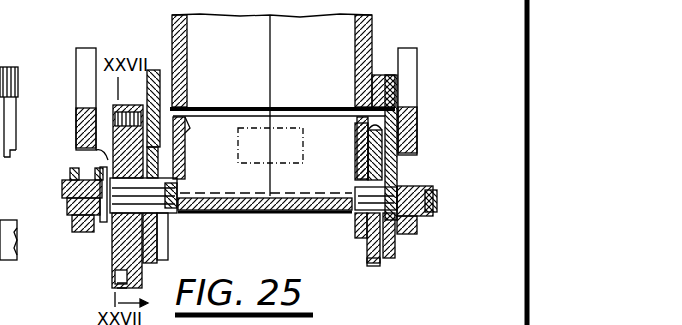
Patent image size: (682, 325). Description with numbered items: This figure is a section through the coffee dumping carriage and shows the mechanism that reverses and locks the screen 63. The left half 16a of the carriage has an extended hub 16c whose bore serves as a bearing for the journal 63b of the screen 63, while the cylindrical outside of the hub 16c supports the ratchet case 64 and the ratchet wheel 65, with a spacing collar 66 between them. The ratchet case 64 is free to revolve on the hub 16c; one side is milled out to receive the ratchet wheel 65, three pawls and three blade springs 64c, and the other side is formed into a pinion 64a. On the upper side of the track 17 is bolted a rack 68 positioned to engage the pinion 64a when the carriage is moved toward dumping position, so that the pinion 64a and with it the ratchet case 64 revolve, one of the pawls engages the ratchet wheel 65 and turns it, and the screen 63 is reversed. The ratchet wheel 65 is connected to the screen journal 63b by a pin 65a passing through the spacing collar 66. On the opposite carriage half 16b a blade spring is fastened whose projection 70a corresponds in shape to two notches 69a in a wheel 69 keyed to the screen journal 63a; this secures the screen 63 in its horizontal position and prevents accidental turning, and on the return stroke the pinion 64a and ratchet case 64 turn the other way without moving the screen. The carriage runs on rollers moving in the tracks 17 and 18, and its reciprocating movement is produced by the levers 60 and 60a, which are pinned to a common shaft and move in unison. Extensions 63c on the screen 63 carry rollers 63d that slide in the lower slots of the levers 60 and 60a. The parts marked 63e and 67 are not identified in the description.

The left half of coffee dumping carriage 16a is at (183, 136).
The carriage half 16b is at (357, 130).
The extended hub 16c is at (185, 185).
The track 17 is at (160, 72).
The track 18 is at (390, 76).
The lever 60 is at (76, 97).
The lever 60a is at (410, 75).
The screen 63 is at (226, 212).
The screen journal 63a is at (357, 218).
The journal of screen 63b is at (175, 212).
The extension 63c is at (72, 226).
The roller 63d is at (68, 178).
The nut 63e is at (415, 186).
The ratchet case 64 is at (134, 105).
The pinion 64a is at (165, 262).
The blade spring 64c is at (142, 282).
The ratchet wheel 65 is at (112, 235).
The pin 65a is at (96, 151).
The spacing collar 66 is at (100, 232).
The pin 67 is at (112, 272).
The rack 68 is at (180, 80).
The wheel 69 is at (356, 172).
The notch 69a is at (368, 266).
The projection 70a is at (368, 148).